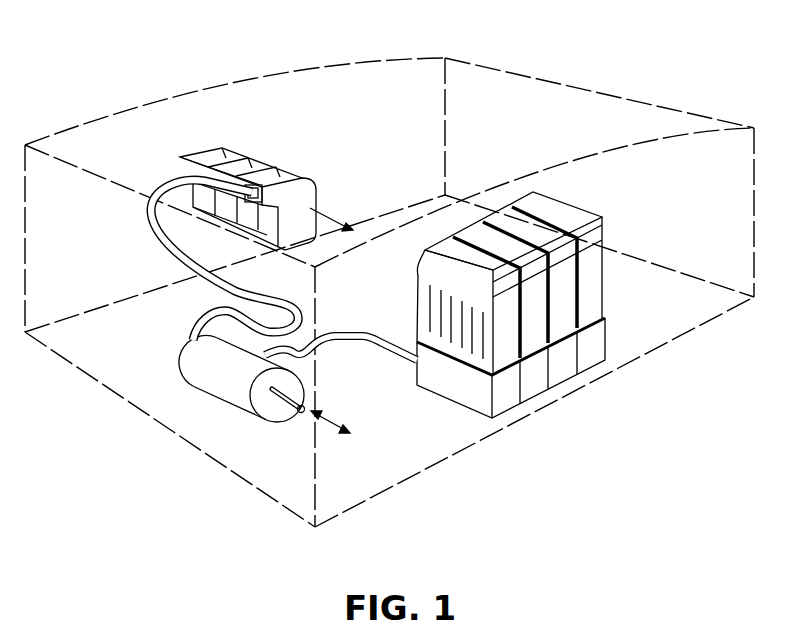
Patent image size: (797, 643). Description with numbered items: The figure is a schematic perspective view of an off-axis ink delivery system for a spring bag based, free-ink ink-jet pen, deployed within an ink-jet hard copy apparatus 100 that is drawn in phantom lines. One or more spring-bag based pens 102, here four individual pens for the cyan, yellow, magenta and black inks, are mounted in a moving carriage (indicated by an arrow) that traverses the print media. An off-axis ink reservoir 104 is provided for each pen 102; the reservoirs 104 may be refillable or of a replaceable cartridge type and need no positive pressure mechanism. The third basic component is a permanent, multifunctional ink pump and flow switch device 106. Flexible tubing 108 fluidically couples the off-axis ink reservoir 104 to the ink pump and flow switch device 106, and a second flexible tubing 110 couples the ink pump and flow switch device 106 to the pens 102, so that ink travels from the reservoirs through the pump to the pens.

The ink-jet hard copy apparatus 100 is at (112, 94).
The spring-bag based pens 102 is at (222, 149).
The off-axis ink reservoir 104 is at (507, 347).
The ink pump and flow switch device 106 is at (195, 363).
The flexible tubing 108 is at (369, 342).
The flexible tubing 110 is at (157, 238).